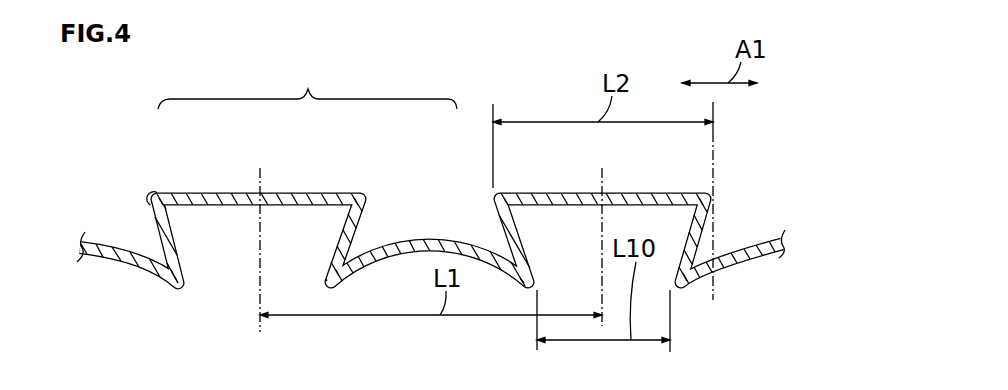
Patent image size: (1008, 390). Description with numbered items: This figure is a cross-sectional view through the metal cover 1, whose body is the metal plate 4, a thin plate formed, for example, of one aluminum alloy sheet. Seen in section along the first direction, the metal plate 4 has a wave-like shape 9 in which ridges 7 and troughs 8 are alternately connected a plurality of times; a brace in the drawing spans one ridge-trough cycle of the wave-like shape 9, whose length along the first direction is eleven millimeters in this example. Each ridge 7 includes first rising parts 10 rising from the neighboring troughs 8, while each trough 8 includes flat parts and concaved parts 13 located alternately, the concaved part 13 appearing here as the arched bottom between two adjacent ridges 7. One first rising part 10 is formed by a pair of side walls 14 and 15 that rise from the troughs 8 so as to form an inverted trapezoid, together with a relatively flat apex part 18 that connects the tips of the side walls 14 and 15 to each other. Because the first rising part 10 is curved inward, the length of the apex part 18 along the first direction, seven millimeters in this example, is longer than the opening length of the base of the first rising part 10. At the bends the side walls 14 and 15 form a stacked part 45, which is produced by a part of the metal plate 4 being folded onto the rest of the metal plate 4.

The metal cover 1 is at (111, 289).
The metal plate 4 is at (702, 193).
The ridge 7 is at (227, 191).
The trough 8 is at (430, 206).
The wave-like shape 9 is at (296, 172).
The first rising part 10 is at (652, 187).
The concaved part 13 is at (447, 237).
The side wall 14 is at (148, 210).
The side wall 15 is at (367, 191).
The apex part 18 is at (216, 190).
The stacked part 45 is at (148, 181).